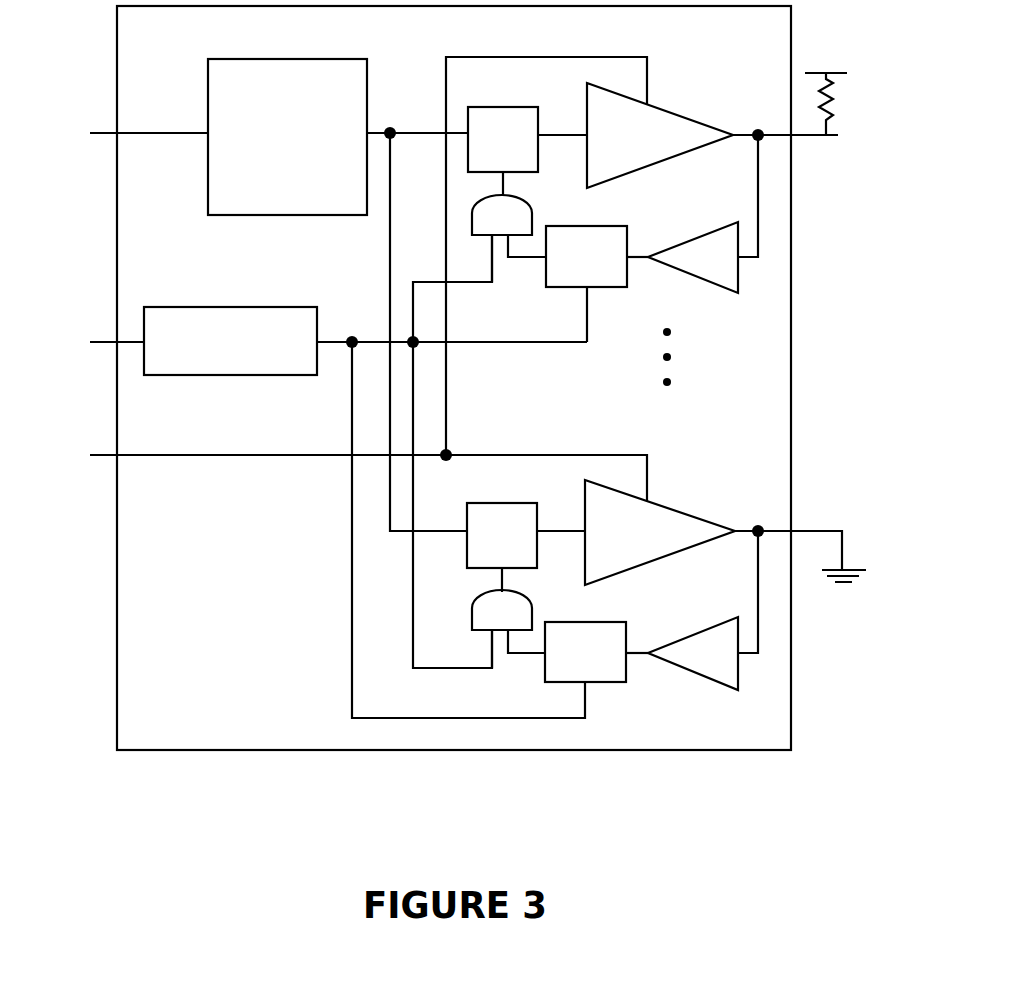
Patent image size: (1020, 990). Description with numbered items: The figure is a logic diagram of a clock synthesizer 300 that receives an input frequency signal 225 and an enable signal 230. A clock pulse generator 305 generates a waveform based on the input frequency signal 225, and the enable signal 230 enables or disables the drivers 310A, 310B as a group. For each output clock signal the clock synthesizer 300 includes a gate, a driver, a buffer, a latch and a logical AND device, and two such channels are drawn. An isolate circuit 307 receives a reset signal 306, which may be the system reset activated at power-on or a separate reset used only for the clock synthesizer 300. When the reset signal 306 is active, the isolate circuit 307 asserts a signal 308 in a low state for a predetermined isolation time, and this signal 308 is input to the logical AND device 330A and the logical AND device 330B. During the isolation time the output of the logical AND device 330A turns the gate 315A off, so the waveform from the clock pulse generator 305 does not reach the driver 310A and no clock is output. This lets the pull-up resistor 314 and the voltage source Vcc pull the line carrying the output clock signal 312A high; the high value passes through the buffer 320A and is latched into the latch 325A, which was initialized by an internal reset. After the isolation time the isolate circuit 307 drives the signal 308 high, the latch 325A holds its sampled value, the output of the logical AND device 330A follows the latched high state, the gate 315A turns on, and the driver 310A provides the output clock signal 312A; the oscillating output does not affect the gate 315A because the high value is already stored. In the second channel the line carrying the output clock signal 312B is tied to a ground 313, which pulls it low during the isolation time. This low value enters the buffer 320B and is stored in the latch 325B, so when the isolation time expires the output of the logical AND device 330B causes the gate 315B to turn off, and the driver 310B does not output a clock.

The clock synthesizer 300 is at (187, 718).
The input frequency signal 225 is at (124, 132).
The clock pulse generator 305 is at (303, 170).
The reset signal 306 is at (87, 340).
The isolate circuit 307 is at (248, 367).
The signal 308 is at (334, 340).
The enable signal 230 is at (347, 279).
The gate 315A is at (530, 160).
The driver 310A is at (653, 162).
The logical AND device 330A is at (528, 230).
The latch 325A is at (613, 278).
The buffer 320A is at (735, 267).
The output clock signal 312A is at (828, 138).
The pull-up resistor 314 is at (844, 99).
The gate 315B is at (529, 558).
The driver 310B is at (652, 558).
The logical AND device 330B is at (528, 627).
The latch 325B is at (612, 675).
The buffer 320B is at (735, 663).
The output clock signal 312B is at (826, 542).
The ground 313 is at (868, 577).